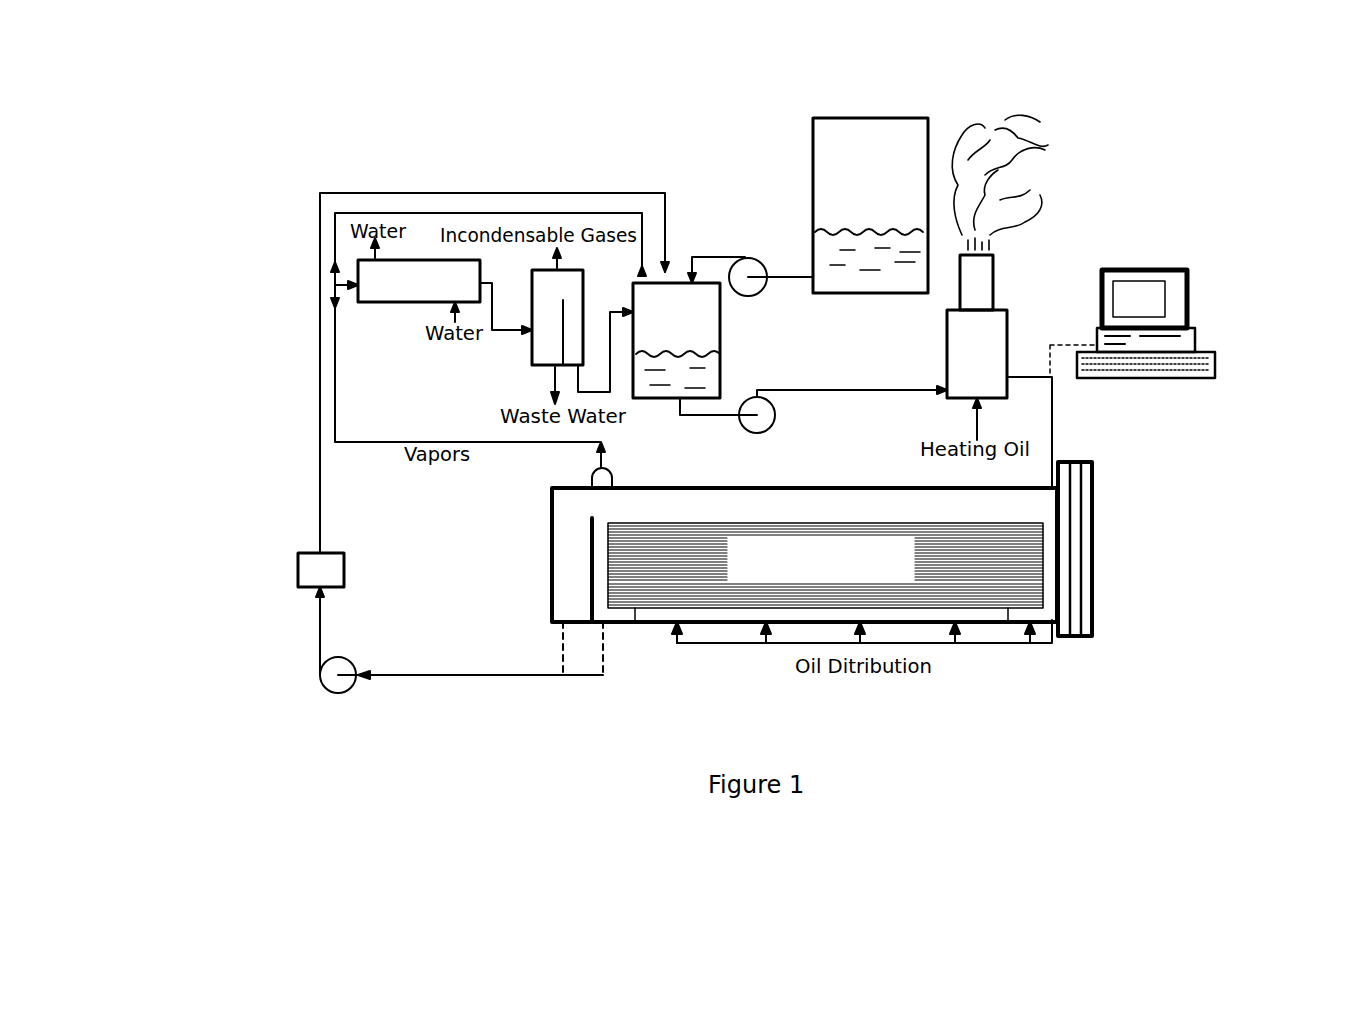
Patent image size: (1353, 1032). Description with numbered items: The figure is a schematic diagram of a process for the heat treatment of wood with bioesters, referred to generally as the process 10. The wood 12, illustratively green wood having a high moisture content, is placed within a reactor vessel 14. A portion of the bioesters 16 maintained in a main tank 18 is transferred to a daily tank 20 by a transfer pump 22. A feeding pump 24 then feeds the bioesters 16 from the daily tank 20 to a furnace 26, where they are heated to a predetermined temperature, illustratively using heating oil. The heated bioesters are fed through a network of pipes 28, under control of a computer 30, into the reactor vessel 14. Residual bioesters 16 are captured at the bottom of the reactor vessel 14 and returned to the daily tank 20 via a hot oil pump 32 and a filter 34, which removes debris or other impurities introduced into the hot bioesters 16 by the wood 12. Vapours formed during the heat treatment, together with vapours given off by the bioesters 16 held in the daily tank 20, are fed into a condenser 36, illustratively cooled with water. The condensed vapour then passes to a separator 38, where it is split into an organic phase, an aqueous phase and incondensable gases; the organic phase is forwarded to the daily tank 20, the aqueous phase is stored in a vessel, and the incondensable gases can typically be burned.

The process for the heat treatment of wood 10 is at (1120, 160).
The wood 12 is at (668, 585).
The reactor vessel 14 is at (997, 502).
The bioesters 16 is at (722, 377).
The main tank 18 is at (887, 118).
The daily tank 20 is at (678, 283).
The transfer pump 22 is at (741, 258).
The feeding pump 24 is at (757, 390).
The furnace 26 is at (1010, 330).
The network of pipes 28 is at (1003, 643).
The computer 30 is at (1185, 270).
The hot oil pump 32 is at (325, 689).
The filter 34 is at (298, 580).
The condenser 36 is at (387, 304).
The separator 38 is at (532, 355).